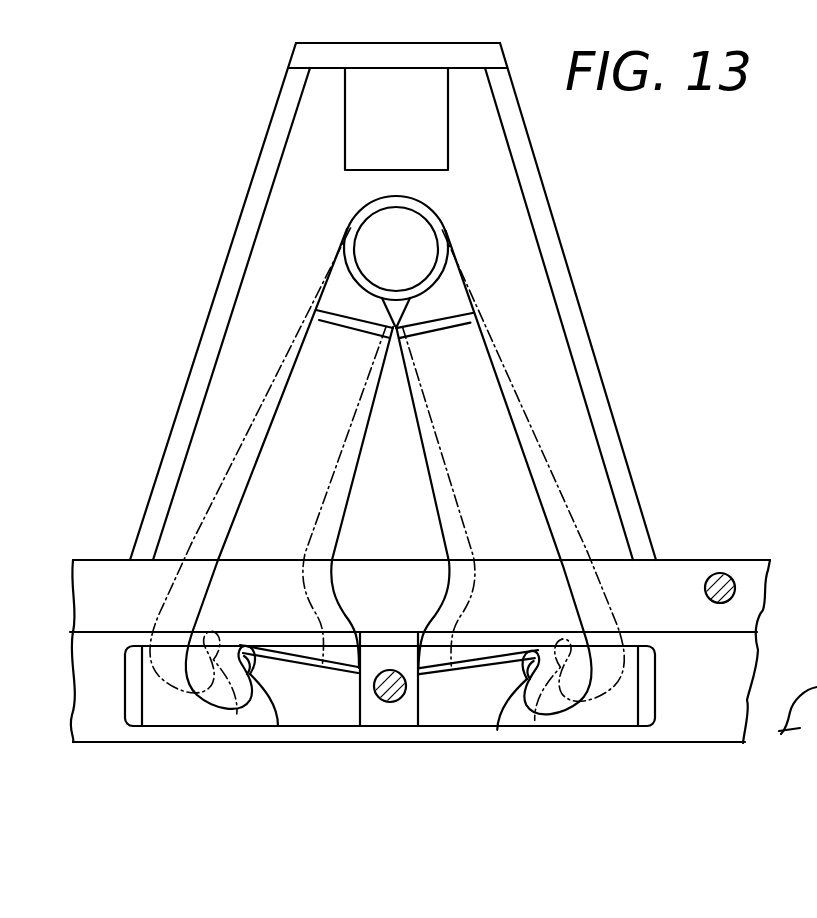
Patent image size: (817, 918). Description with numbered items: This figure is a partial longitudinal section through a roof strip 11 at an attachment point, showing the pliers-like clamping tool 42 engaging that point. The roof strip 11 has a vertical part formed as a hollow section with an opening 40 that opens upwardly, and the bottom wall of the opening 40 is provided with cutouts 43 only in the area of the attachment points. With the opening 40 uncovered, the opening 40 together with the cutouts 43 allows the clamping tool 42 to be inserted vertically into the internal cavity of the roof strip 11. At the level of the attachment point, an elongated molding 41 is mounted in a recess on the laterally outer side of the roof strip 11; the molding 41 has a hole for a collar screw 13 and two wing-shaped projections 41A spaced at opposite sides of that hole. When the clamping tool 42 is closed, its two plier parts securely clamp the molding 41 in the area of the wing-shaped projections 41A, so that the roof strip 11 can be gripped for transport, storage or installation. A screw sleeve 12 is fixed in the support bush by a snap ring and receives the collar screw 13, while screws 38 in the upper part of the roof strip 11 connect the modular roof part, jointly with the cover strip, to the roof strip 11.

The roof strip 11 is at (707, 677).
The screw sleeve 12 is at (390, 808).
The collar screw 13 is at (378, 696).
The screws 38 is at (736, 588).
The opening 40 is at (388, 572).
The elongated molding 41 is at (583, 713).
The wing-shaped projections 41A is at (252, 672).
The clamping tool 42 is at (507, 452).
The cutouts 43 is at (643, 713).